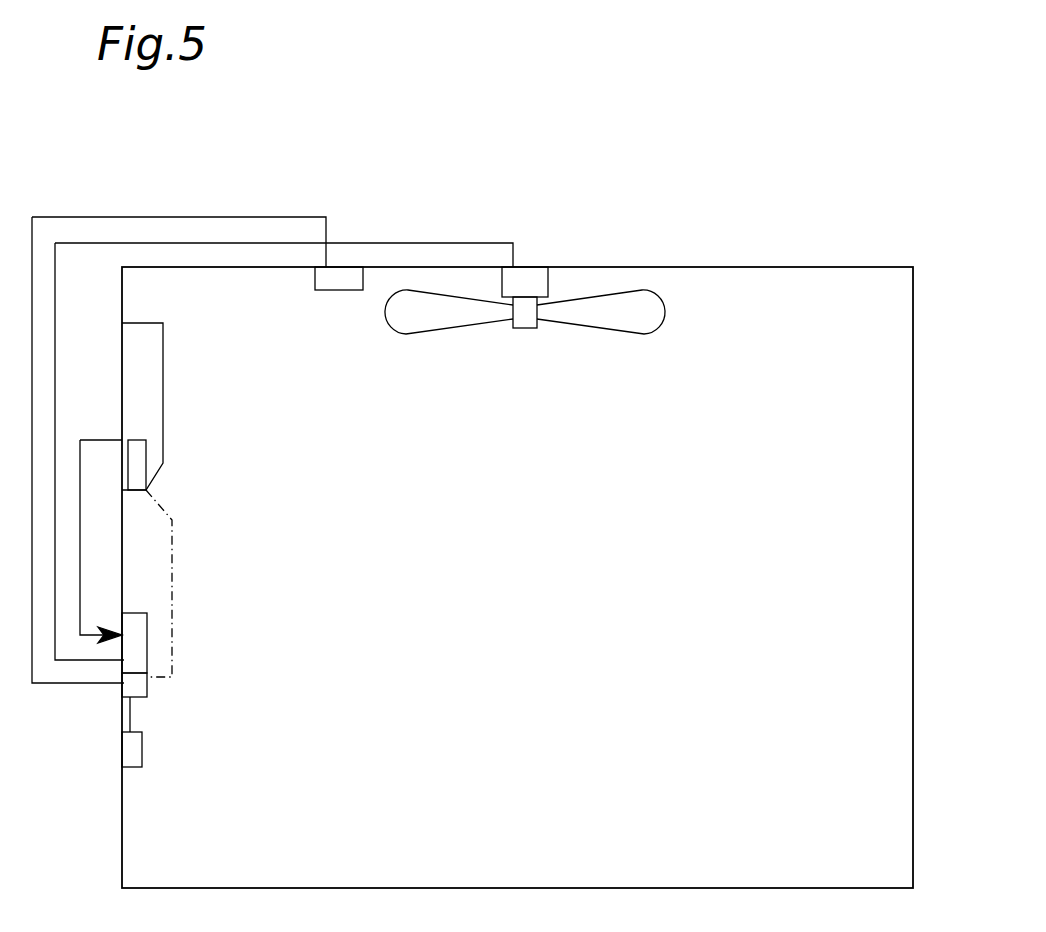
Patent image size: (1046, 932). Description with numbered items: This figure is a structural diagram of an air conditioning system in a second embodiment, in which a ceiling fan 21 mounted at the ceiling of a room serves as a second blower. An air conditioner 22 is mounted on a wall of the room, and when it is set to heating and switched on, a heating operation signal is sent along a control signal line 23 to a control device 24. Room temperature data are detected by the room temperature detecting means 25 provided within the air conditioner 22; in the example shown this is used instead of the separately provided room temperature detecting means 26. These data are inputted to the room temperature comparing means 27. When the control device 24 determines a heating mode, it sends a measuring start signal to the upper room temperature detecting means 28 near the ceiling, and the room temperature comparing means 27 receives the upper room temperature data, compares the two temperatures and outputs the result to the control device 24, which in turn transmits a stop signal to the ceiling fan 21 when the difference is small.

The ceiling fan 21 is at (520, 275).
The air conditioner 22 is at (146, 420).
The control signal line 23 is at (80, 553).
The control device 24 is at (137, 650).
The room temperature detecting means 25 is at (133, 463).
The room temperature detecting means 26 is at (130, 752).
The room temperature comparing means 27 is at (137, 687).
The upper room temperature detecting means 28 is at (340, 277).